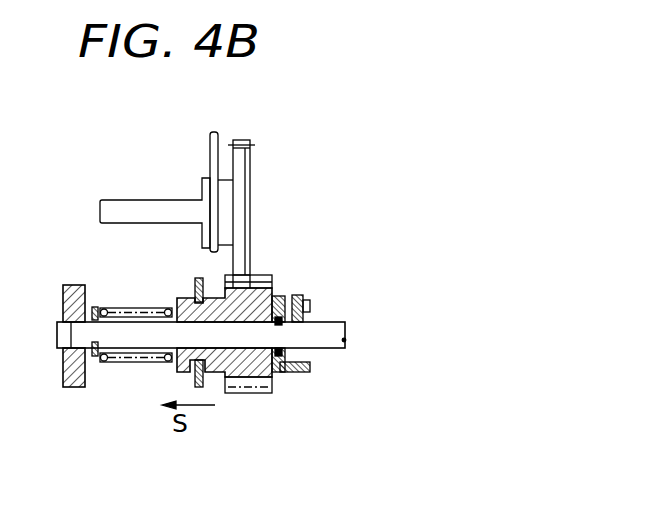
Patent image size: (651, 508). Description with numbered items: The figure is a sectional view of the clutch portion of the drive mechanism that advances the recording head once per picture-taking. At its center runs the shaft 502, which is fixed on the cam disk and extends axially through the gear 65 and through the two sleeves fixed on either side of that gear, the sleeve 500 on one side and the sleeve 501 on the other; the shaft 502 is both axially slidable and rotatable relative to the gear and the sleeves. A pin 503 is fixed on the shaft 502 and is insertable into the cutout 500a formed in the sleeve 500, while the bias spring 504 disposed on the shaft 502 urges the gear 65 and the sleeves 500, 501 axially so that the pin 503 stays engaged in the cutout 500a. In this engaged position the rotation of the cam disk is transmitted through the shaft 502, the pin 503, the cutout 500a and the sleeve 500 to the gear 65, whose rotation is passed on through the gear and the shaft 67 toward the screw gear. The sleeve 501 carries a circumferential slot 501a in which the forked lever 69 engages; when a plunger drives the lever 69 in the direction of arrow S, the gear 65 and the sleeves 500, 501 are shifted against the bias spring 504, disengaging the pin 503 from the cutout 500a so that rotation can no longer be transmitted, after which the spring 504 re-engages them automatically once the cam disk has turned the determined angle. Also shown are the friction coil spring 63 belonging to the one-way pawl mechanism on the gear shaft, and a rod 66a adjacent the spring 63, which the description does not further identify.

The friction coil spring 63 is at (212, 138).
The shaft 67 is at (145, 211).
The rod 66a is at (252, 163).
The gear 65 is at (272, 286).
The circumferential slot 501a is at (205, 278).
The sleeve 501 is at (177, 300).
The pin 503 is at (300, 297).
The cutout 500a is at (312, 304).
The shaft 502 is at (344, 340).
The sleeve 500 is at (292, 372).
The bias spring 504 is at (165, 363).
The forked lever 69 is at (200, 380).